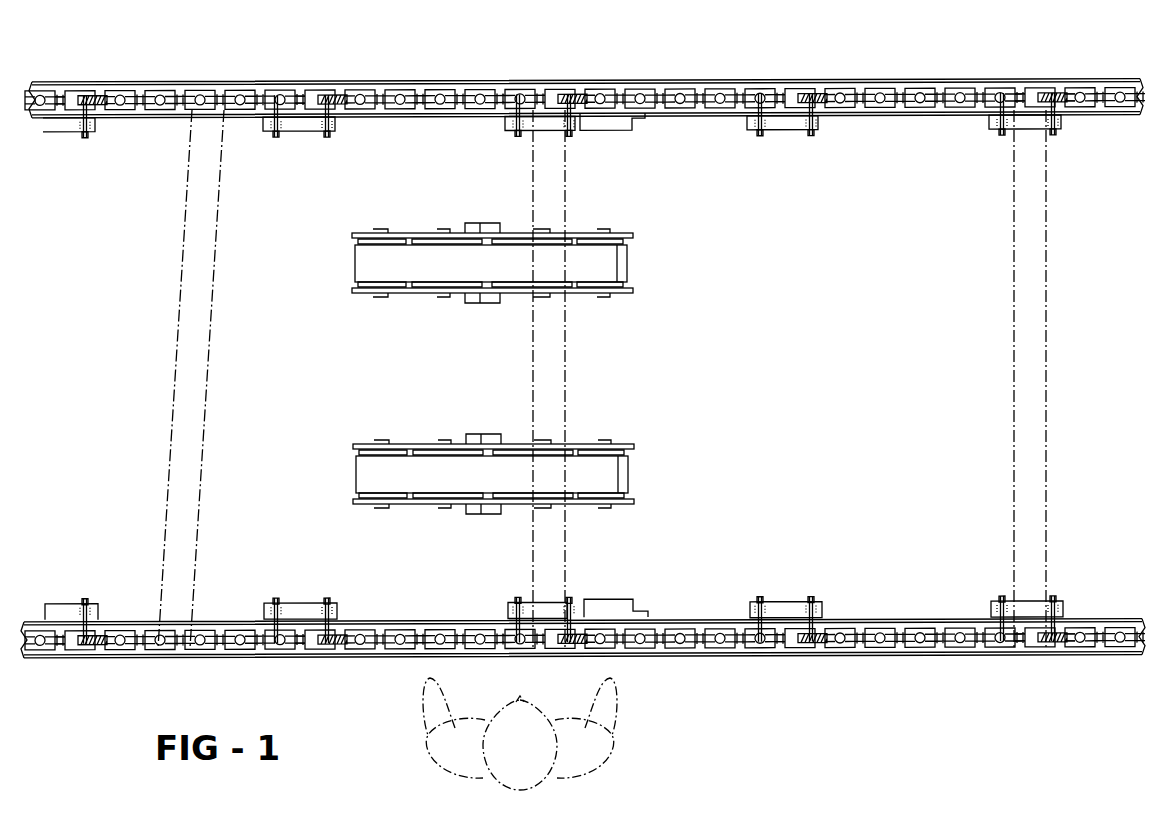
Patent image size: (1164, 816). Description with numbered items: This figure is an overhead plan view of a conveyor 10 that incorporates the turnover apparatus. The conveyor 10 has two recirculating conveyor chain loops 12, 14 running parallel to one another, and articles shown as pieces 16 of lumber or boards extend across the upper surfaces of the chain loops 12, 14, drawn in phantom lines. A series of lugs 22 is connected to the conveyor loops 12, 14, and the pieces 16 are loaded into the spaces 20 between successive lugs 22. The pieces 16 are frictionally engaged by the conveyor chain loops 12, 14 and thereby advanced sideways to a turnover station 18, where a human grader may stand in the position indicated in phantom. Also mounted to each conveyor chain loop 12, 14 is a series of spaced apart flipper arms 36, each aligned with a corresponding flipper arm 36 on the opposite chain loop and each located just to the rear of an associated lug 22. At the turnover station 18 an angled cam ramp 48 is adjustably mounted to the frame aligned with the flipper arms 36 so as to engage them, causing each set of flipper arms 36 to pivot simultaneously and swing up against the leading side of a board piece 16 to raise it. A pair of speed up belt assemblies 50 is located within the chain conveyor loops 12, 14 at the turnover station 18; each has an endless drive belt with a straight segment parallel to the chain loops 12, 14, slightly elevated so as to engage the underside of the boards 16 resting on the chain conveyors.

The conveyor 10 is at (146, 70).
The conveyor chain loop 12 is at (239, 86).
The conveyor chain loop 14 is at (121, 659).
The piece of lumber 16 is at (200, 288).
The turnover station 18 is at (636, 679).
The space 20 is at (922, 610).
The lug 22 is at (1070, 642).
The flipper arm 36 is at (303, 136).
The cam ramp 48 is at (620, 136).
The speed up belt assembly 50 is at (411, 214).